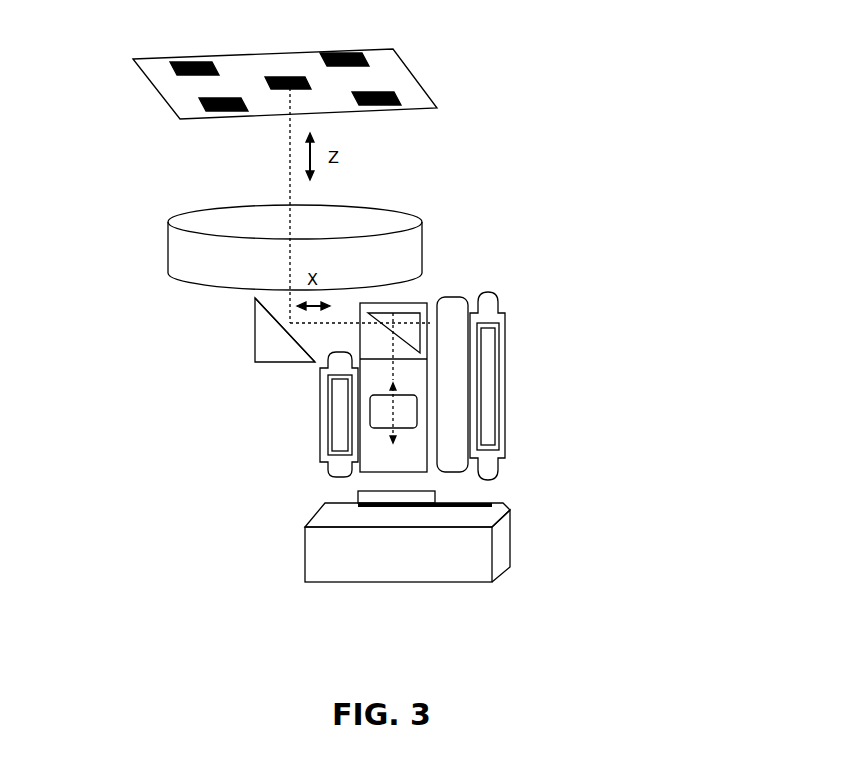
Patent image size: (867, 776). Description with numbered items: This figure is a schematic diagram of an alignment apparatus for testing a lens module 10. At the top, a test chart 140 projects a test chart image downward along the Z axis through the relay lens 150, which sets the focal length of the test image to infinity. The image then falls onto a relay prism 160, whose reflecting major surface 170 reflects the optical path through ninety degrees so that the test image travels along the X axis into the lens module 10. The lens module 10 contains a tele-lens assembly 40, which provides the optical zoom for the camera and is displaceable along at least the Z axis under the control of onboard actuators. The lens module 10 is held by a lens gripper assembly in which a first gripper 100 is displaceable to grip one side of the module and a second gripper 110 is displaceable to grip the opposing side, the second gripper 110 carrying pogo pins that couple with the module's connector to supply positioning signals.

The lens module 10 is at (397, 305).
The tele-lens assembly 40 is at (352, 428).
The first gripper 100 is at (322, 415).
The second gripper 110 is at (507, 385).
The test chart 140 is at (425, 85).
The relay lens 150 is at (167, 245).
The relay prism 160 is at (253, 335).
The reflecting major surface 170 is at (272, 328).